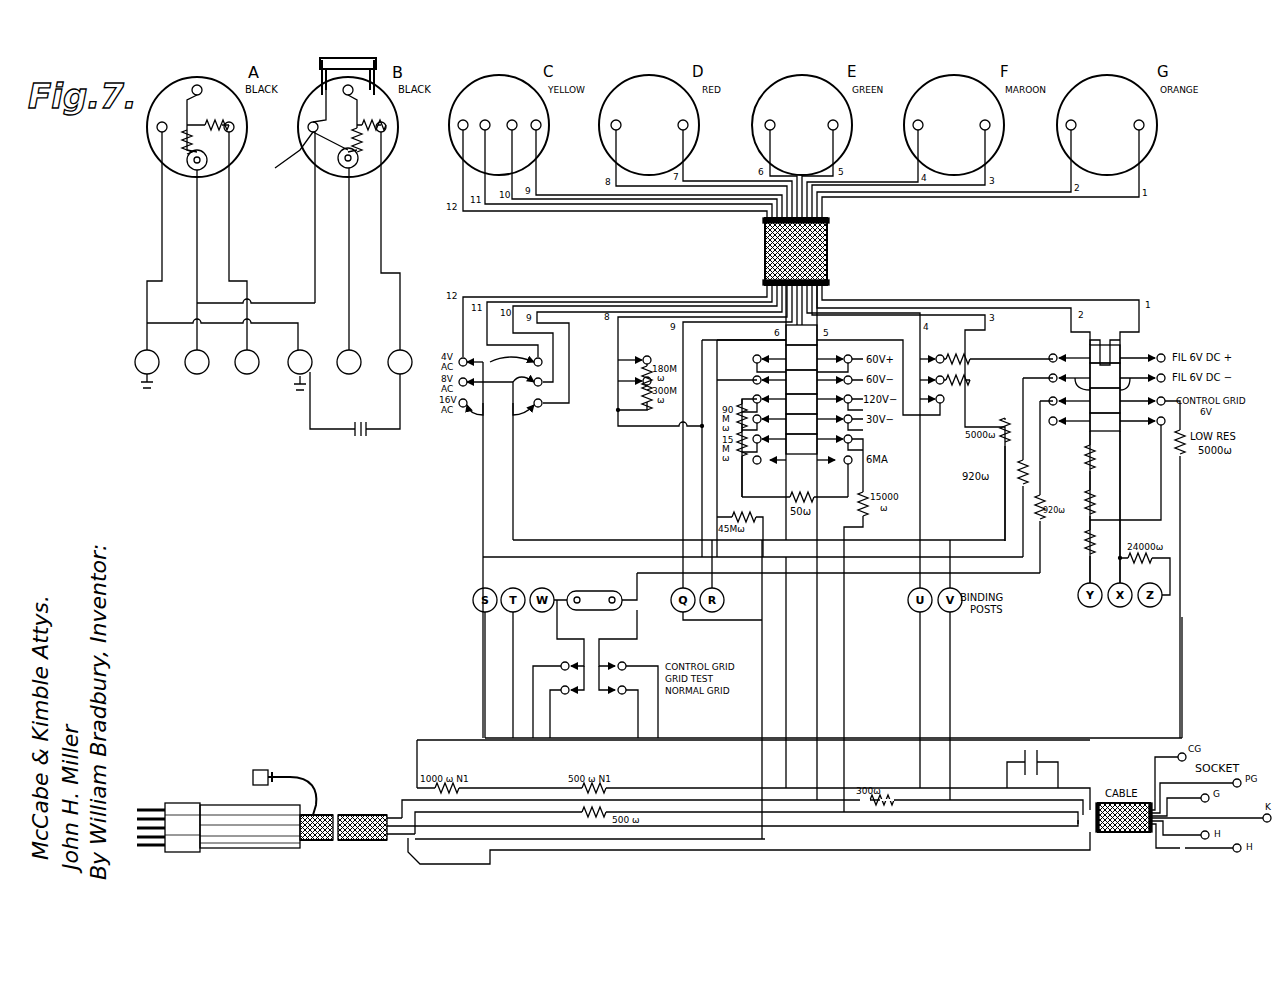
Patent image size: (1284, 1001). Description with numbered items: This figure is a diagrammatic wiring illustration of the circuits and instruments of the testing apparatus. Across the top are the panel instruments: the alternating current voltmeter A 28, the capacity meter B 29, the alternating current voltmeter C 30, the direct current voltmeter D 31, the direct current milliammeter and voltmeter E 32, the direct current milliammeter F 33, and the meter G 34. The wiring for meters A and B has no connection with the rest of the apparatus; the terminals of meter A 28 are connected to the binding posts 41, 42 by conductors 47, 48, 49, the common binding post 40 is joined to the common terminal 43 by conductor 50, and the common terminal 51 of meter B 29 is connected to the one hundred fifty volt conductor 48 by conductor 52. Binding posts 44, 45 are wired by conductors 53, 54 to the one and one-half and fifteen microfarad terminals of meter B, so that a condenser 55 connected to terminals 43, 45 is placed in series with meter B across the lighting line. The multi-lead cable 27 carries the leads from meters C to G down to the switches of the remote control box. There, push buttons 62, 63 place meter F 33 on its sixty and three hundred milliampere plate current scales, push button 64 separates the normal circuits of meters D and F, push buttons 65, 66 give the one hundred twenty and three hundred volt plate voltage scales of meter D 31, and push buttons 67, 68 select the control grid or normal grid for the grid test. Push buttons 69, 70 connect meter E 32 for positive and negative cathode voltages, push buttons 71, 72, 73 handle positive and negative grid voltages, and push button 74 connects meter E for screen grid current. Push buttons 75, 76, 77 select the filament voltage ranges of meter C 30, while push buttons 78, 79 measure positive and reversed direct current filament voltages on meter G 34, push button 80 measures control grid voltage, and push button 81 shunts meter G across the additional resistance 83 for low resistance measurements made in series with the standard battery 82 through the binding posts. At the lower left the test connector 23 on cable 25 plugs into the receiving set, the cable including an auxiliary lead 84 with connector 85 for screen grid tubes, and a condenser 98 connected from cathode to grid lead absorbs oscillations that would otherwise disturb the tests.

The test connector 23 is at (233, 815).
The cable 25 is at (345, 842).
The cable 27 is at (830, 243).
The instrument A 28 is at (175, 100).
The meter B 29 is at (392, 138).
The meter C 30 is at (500, 92).
The meter D 31 is at (652, 90).
The meter E 32 is at (805, 90).
The meter F 33 is at (955, 88).
The meter G 34 is at (1108, 88).
The binding post 40 is at (138, 356).
The binding post 41 is at (199, 360).
The binding post 42 is at (249, 360).
The terminal 43 is at (302, 360).
The terminal 44 is at (351, 360).
The terminal 45 is at (400, 350).
The conductor 47 is at (162, 226).
The conductor 48 is at (197, 253).
The conductor 49 is at (252, 238).
The conductor 50 is at (268, 303).
The common terminal 51 is at (284, 152).
The conductor 52 is at (315, 218).
The conductor 53 is at (349, 270).
The conductor 54 is at (381, 228).
The condenser 55 is at (366, 432).
The push button 62 is at (926, 355).
The push button 63 is at (960, 379).
The push button 64 is at (942, 393).
The push button 65 is at (616, 358).
The push button 66 is at (616, 383).
The push button 67 is at (577, 664).
The push button 68 is at (584, 694).
The push button 69 is at (770, 355).
The push button 70 is at (770, 378).
The push button 71 is at (763, 435).
The push button 72 is at (802, 419).
The push button 73 is at (802, 438).
The push button 74 is at (835, 466).
The push button 75 is at (500, 545).
The push button 76 is at (500, 458).
The push button 77 is at (500, 412).
The push button 78 is at (1072, 352).
The push button 79 is at (1107, 383).
The push button 80 is at (1107, 404).
The push button 81 is at (1107, 424).
The standard battery 82 is at (590, 592).
The additional resistance 83 is at (1082, 490).
The auxiliary lead 84 is at (300, 777).
The connector 85 is at (262, 770).
The condenser 98 is at (1030, 750).